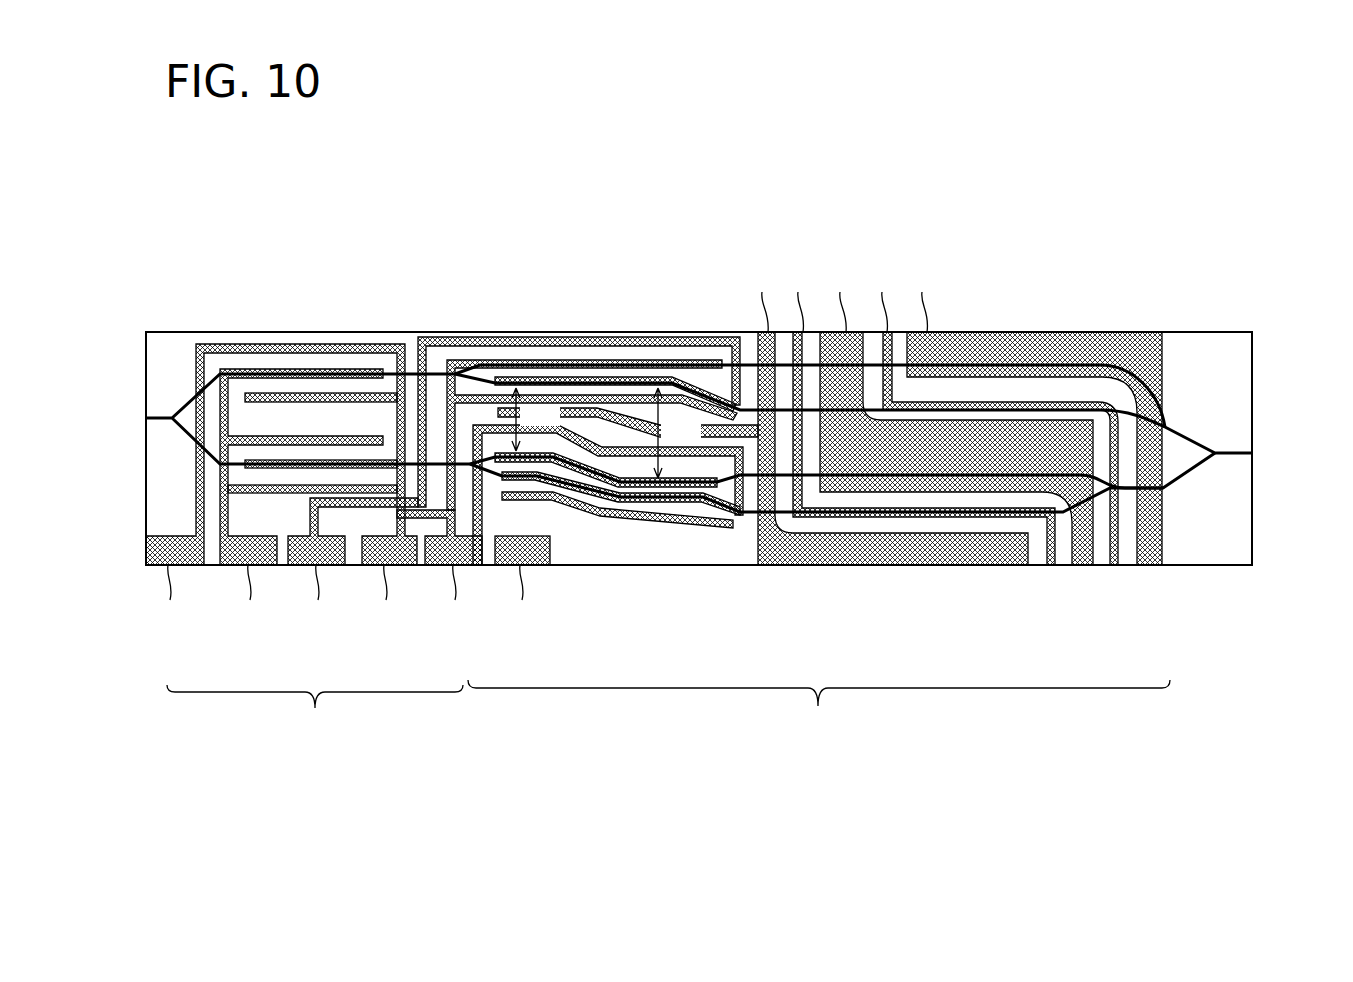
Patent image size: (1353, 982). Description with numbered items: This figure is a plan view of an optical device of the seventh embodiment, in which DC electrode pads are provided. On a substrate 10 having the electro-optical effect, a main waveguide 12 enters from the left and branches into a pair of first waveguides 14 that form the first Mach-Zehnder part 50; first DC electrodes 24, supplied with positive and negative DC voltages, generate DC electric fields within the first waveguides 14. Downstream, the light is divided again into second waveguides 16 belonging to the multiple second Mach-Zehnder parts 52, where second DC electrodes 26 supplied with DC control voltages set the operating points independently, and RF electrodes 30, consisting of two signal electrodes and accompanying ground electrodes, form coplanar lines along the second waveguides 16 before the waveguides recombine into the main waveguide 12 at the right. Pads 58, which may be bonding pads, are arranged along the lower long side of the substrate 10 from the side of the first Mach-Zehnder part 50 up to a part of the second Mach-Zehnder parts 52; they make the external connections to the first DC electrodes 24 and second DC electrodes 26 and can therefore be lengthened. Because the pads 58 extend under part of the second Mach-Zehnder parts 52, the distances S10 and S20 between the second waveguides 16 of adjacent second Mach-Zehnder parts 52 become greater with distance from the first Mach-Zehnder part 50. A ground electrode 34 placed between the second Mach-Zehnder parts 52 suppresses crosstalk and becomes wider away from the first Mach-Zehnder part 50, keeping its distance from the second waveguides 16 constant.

The substrate 10 is at (1253, 488).
The main waveguide 12 is at (152, 418).
The first waveguides 14 is at (320, 369).
The second waveguides 16 is at (602, 360).
The first DC electrodes 24 is at (283, 344).
The second DC electrodes 26 is at (550, 337).
The RF electrodes 30 is at (945, 260).
The ground electrode 34 is at (640, 420).
The first Mach-Zehnder part 50 is at (315, 714).
The second Mach-Zehnder parts 52 is at (819, 711).
The pads 58 is at (146, 540).
The distance between second waveguides S10 is at (536, 419).
The distance between second waveguides S20 is at (677, 433).